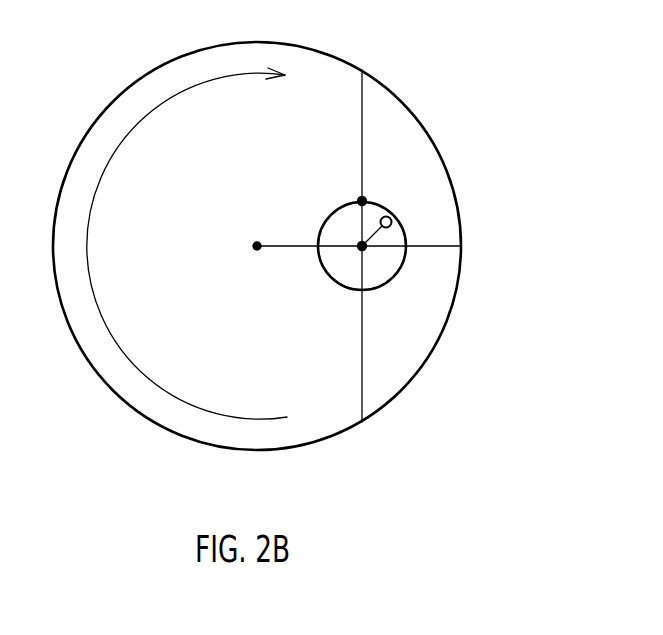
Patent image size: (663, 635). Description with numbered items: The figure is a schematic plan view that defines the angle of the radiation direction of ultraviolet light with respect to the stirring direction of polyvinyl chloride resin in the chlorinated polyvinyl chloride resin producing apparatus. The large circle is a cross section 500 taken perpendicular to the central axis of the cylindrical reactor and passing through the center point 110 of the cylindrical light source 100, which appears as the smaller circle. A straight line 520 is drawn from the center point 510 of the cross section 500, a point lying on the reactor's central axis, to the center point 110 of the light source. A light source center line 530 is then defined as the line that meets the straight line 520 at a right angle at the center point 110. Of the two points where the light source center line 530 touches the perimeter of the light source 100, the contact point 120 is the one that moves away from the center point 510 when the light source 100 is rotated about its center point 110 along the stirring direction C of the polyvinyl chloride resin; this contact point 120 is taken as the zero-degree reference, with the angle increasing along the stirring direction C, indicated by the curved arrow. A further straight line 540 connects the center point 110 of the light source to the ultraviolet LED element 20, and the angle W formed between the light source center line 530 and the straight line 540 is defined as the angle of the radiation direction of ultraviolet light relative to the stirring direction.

The cross section 500 is at (394, 92).
The light source center line 530 is at (362, 145).
The straight line 520 is at (433, 248).
The center point of the cross section 510 is at (252, 246).
The light source 100 is at (405, 230).
The angle W is at (366, 232).
The contact point 120 is at (362, 201).
The center point of the light source 110 is at (362, 246).
The straight line 540 is at (375, 240).
The ultraviolet LED element 20 is at (391, 216).
The stirring direction C is at (86, 230).